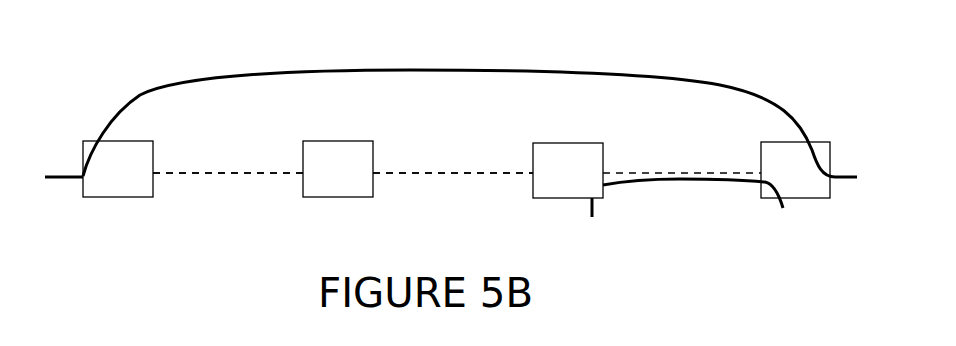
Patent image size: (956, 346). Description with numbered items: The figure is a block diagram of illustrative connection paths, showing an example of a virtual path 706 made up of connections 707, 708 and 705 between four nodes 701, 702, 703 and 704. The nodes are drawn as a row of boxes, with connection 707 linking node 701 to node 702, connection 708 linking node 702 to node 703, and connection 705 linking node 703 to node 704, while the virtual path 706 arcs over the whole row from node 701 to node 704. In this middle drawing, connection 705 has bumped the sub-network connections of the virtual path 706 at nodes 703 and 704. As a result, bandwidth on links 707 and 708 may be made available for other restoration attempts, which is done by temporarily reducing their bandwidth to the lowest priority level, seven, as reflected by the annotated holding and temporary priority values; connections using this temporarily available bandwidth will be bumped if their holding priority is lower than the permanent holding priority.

The node 701 is at (112, 197).
The node 702 is at (337, 197).
The node 703 is at (563, 198).
The node 704 is at (809, 198).
The connection 705 is at (740, 182).
The virtual path 706 is at (412, 70).
The connection 707 is at (262, 173).
The connection 708 is at (503, 173).